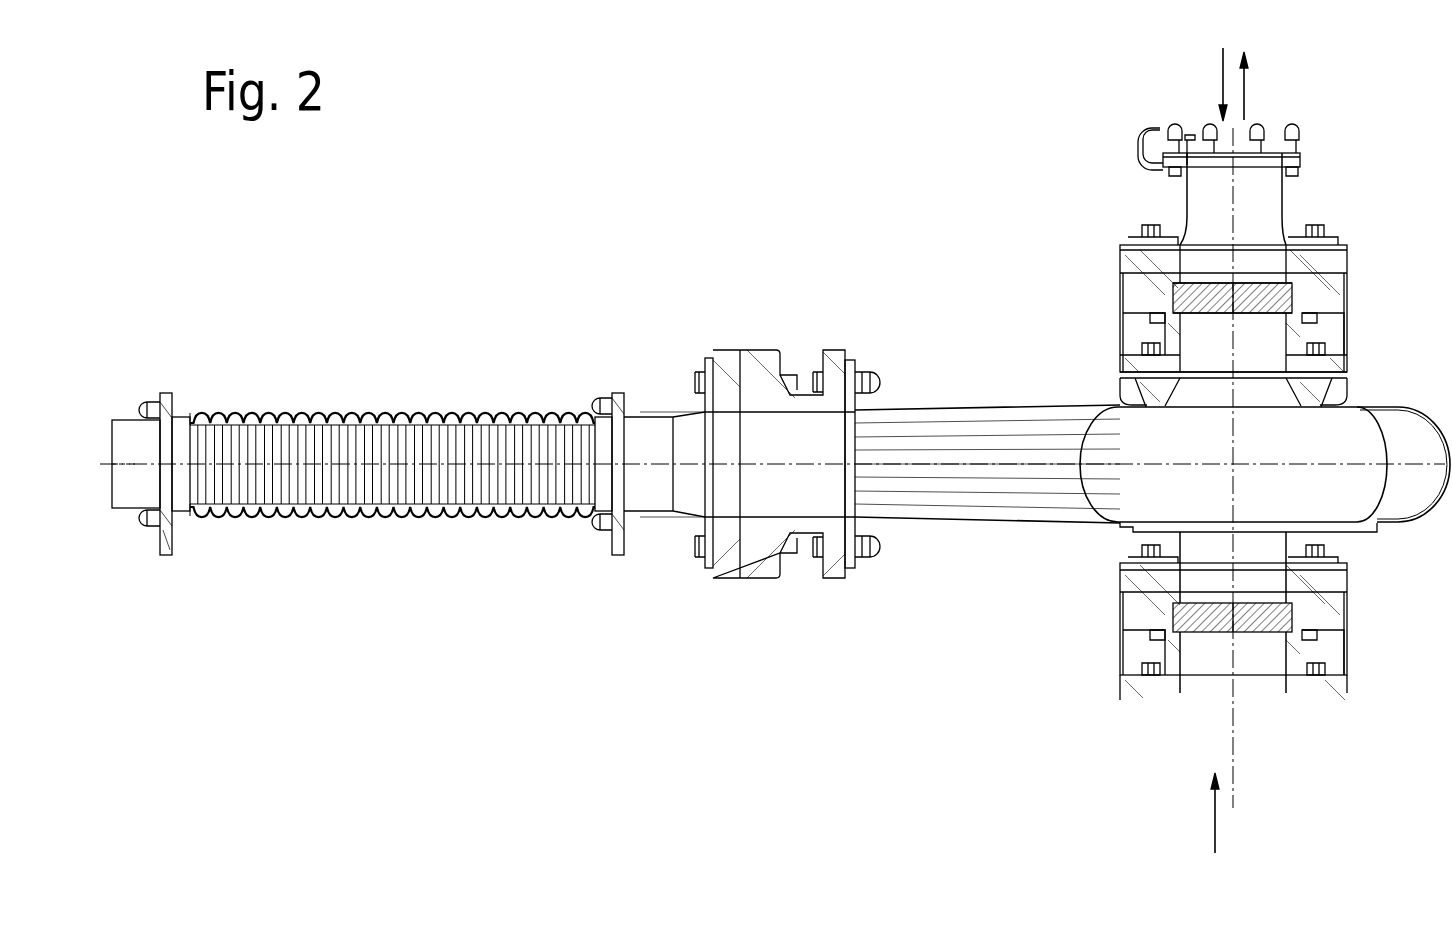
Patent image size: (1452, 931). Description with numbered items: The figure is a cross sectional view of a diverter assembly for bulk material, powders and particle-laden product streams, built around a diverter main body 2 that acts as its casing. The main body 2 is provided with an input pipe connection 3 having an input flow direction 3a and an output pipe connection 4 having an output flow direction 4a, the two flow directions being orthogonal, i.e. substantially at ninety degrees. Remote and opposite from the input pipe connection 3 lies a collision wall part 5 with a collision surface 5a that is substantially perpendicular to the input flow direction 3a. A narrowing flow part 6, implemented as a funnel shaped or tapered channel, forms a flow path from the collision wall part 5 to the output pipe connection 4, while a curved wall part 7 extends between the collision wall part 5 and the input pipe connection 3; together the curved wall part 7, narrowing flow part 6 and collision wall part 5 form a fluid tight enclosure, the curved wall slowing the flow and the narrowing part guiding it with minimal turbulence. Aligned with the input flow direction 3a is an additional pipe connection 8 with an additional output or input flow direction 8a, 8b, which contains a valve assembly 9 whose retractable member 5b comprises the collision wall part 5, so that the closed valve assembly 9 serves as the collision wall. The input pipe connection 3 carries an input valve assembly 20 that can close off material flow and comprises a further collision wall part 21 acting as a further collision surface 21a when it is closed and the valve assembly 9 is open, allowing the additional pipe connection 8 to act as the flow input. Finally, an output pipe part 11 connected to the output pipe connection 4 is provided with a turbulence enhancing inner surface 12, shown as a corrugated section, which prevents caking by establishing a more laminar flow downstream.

The diverter main body 2 is at (1415, 407).
The input pipe connection 3 is at (1325, 560).
The input flow direction 3a is at (1216, 823).
The output pipe connection 4 is at (765, 350).
The output flow direction 4a is at (180, 455).
The collision wall part 5 is at (1272, 294).
The collision surface 5a is at (1240, 312).
The retractable member 5b is at (1203, 290).
The narrowing flow part 6 is at (973, 408).
The curved wall part 7 is at (1415, 522).
The additional pipe connection 8 is at (1297, 160).
The additional output flow direction 8a is at (1250, 90).
The additional input flow direction 8b is at (1218, 90).
The valve assembly 9 is at (1120, 297).
The output pipe part 11 is at (492, 392).
The turbulence enhancing inner surface 12 is at (330, 411).
The input valve assembly 20 is at (1120, 600).
The further collision wall part 21 is at (1283, 623).
The further collision surface 21a is at (1225, 610).